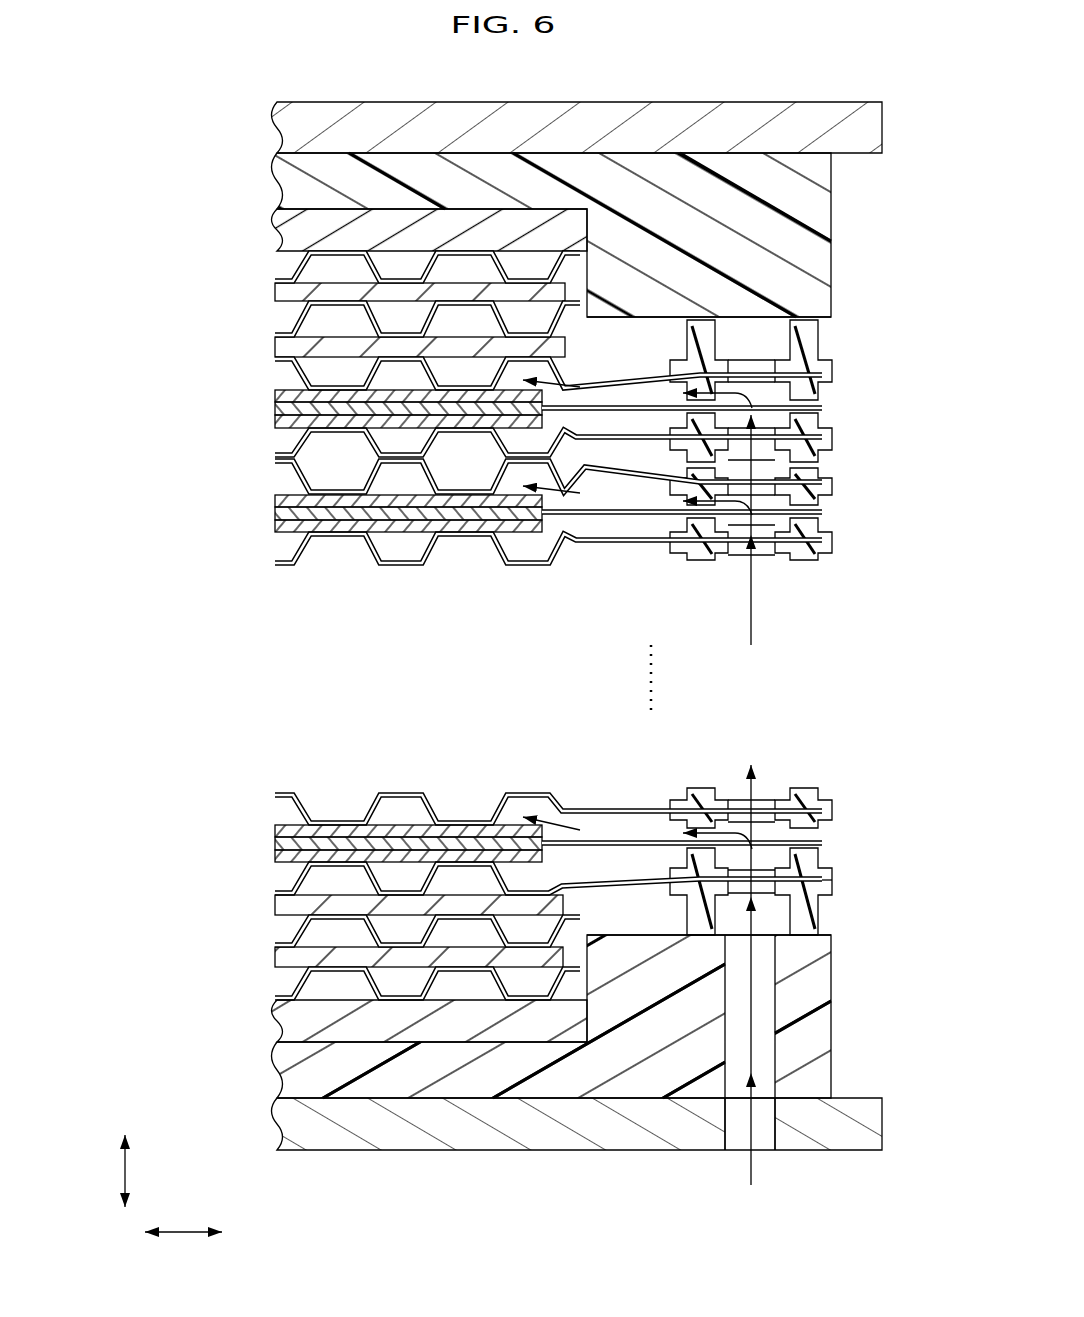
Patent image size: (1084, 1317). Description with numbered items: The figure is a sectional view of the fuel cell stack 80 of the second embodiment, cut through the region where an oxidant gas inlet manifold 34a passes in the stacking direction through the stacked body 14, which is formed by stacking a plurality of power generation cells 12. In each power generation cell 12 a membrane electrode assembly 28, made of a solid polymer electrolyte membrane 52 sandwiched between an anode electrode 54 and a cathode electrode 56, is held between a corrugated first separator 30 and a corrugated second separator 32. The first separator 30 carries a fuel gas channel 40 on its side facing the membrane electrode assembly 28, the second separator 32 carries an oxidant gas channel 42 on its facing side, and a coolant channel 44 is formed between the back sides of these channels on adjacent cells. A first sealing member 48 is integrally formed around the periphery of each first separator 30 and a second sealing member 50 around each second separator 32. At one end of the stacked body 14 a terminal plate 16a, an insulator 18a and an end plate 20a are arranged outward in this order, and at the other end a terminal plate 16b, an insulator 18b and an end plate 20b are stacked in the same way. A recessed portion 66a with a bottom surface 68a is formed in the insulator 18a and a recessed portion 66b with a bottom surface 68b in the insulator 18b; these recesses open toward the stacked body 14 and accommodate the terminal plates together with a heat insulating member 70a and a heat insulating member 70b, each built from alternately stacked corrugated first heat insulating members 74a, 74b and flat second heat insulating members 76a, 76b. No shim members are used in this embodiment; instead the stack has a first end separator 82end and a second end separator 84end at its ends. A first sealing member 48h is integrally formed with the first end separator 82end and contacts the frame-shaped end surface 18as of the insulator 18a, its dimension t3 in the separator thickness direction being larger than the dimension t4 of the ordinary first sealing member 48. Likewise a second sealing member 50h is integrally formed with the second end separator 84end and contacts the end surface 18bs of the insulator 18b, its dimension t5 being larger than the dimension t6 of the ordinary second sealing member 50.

The fuel cell stack 80 is at (608, 74).
The end plate 20b is at (285, 118).
The insulator 18b is at (578, 235).
The terminal plate 16b is at (290, 229).
The bottom surface 68b is at (416, 210).
The recessed portion 66b is at (592, 214).
The end surface 18bs is at (832, 318).
The heat insulating member 70b is at (189, 258).
The first heat insulating member 74b is at (298, 262).
The second heat insulating member 76b is at (298, 292).
The stacked body 14 is at (144, 400).
The power generation cell 12 is at (184, 370).
The second end separator 84end is at (298, 372).
The first end separator 82end is at (298, 880).
The membrane electrode assembly 28 is at (502, 630).
The first separator 30 is at (298, 441).
The second separator 32 is at (298, 483).
The cathode electrode 56 is at (323, 503).
The solid polymer electrolyte membrane 52 is at (339, 513).
The anode electrode 54 is at (300, 600).
The oxidant gas channel 42 is at (418, 500).
The fuel gas channel 40 is at (406, 556).
The coolant channel 44 is at (461, 472).
The first sealing member 48 is at (826, 456).
The first sealing member 48h is at (830, 888).
The second sealing member 50 is at (803, 788).
The second sealing member 50h is at (830, 362).
The heat insulating member 70a is at (186, 903).
The first heat insulating member 74a is at (298, 940).
The second heat insulating member 76a is at (298, 906).
The terminal plate 16a is at (290, 1022).
The insulator 18a is at (537, 1075).
The bottom surface 68a is at (468, 1046).
The recessed portion 66a is at (598, 1034).
The end surface 18as is at (832, 936).
The oxidant gas inlet manifold 34a is at (769, 1145).
The end plate 20a is at (285, 1134).
The dimension t5 is at (765, 402).
The dimension t4 is at (832, 408).
The dimension t6 is at (835, 788).
The dimension t3 is at (832, 935).